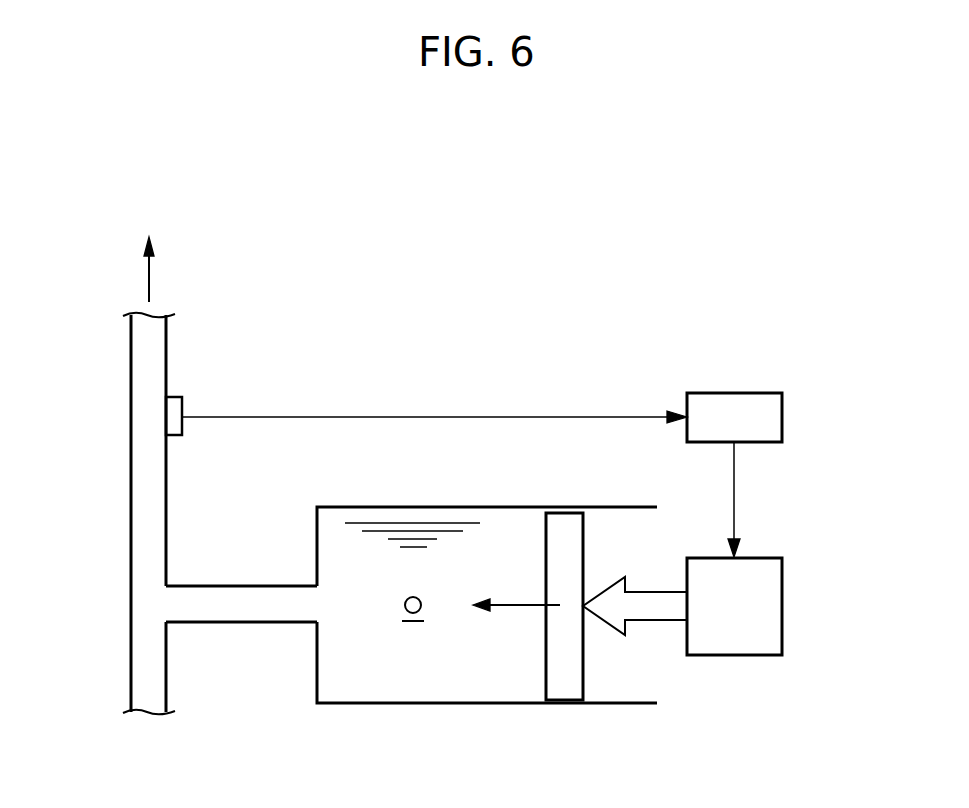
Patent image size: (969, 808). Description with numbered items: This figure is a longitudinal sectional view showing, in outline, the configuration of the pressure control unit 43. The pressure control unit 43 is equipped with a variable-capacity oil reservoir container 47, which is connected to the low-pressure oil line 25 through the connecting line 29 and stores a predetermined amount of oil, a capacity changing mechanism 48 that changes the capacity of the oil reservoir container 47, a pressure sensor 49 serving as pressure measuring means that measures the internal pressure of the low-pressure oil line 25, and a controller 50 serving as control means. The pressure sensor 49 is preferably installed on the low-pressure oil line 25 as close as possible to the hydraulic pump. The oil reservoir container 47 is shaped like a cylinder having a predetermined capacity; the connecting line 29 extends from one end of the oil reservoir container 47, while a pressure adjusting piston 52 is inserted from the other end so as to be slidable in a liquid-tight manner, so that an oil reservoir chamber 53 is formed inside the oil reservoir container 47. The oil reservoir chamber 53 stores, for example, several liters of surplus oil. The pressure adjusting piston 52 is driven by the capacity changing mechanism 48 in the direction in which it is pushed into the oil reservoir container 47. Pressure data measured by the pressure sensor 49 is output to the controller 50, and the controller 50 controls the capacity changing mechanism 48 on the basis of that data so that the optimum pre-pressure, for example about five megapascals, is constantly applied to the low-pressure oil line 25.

The low-pressure oil line 25 is at (130, 462).
The connecting line 29 is at (238, 585).
The pressure control unit 43 is at (496, 260).
The oil reservoir container 47 is at (375, 705).
The capacity changing mechanism 48 is at (783, 607).
The pressure sensor 49 is at (168, 397).
The controller 50 is at (734, 393).
The pressure adjusting piston 52 is at (565, 683).
The oil reservoir chamber 53 is at (478, 690).